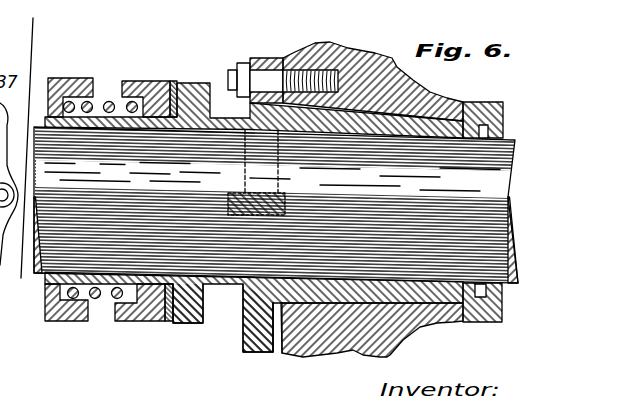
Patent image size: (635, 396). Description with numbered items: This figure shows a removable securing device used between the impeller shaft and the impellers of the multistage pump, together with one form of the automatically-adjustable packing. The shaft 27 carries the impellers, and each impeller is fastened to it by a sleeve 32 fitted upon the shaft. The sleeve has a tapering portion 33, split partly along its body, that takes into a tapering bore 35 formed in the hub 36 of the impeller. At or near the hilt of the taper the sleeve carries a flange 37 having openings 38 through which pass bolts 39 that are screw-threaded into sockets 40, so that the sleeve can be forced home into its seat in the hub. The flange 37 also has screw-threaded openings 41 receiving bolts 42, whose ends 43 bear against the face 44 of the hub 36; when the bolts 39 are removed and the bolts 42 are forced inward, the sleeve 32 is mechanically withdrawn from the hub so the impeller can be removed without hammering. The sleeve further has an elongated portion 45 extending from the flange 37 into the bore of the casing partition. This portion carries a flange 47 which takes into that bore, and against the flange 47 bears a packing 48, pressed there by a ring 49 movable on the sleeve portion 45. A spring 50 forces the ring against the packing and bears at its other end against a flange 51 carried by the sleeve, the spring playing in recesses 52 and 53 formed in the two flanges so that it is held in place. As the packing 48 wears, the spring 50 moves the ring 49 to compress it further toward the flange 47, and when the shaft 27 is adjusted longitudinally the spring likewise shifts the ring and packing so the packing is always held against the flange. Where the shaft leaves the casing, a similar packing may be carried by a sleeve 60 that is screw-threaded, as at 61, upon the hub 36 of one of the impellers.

The shaft 27 is at (36, 271).
The sleeve 32 is at (333, 303).
The tapering portion 33 is at (377, 303).
The tapering bore 35 is at (428, 93).
The hub 36 is at (418, 325).
The flange 37 is at (248, 352).
The openings 38 is at (275, 60).
The bolts 39 is at (268, 73).
The sockets 40 is at (298, 72).
The screw-threaded openings 41 is at (257, 196).
The bolts 42 is at (241, 192).
The ends 43 is at (273, 200).
The face 44 is at (277, 353).
The elongated portion 45 is at (243, 282).
The flange 47 is at (197, 324).
The packing 48 is at (165, 322).
The ring 49 is at (134, 322).
The spring 50 is at (96, 299).
The flange 51 is at (66, 319).
The recess 52 is at (78, 97).
The recess 53 is at (127, 84).
The sleeve 60 is at (487, 321).
The screw-thread 61 is at (481, 103).